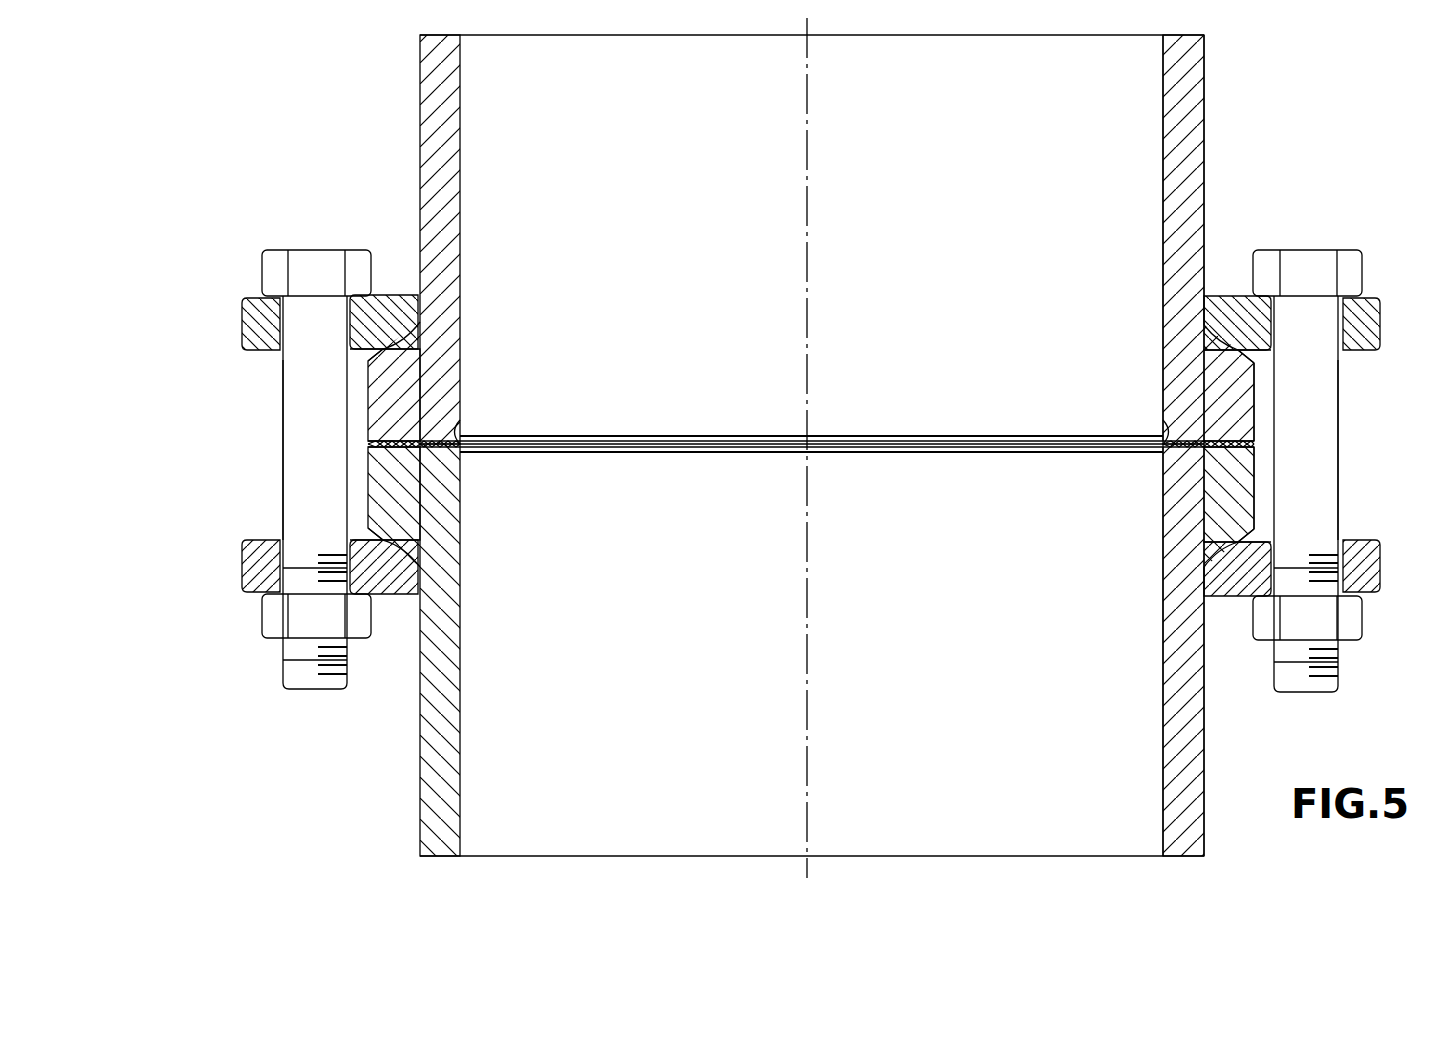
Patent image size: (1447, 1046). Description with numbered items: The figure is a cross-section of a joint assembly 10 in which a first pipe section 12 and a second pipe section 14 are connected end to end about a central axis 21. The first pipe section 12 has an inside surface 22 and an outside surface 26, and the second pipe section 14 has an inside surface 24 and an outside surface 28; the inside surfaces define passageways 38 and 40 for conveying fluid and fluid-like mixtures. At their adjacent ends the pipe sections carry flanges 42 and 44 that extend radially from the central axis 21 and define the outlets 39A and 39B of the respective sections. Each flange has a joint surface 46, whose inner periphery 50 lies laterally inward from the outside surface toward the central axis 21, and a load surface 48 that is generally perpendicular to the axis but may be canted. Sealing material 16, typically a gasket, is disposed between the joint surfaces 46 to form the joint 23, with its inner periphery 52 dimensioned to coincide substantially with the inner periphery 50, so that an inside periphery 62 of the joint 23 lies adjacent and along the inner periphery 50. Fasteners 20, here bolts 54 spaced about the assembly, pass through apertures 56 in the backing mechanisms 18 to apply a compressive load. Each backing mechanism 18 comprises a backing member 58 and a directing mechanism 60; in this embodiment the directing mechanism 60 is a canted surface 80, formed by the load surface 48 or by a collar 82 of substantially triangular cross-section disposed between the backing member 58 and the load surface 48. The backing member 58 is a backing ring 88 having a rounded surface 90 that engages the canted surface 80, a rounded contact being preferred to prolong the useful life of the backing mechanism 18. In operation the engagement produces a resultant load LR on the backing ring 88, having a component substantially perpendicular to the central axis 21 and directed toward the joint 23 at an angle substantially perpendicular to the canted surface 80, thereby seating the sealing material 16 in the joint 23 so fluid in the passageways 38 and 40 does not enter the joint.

The joint assembly 10 is at (1357, 105).
The first pipe section 12 is at (1197, 118).
The second pipe section 14 is at (1200, 775).
The sealing material 16 is at (368, 444).
The backing mechanism 18 is at (801, 448).
The fastener 20 is at (283, 475).
The central axis 21 is at (809, 100).
The inside surface of first pipe section 22 is at (1163, 127).
The joint 23 is at (486, 477).
The inside surface of second pipe section 24 is at (1163, 768).
The outside surface of first pipe section 26 is at (1205, 153).
The outside surface of second pipe section 28 is at (1205, 738).
The passageway of first pipe section 38 is at (929, 187).
The outlet of first pipe section 39A is at (1062, 427).
The outlet of second pipe section 39B is at (568, 463).
The passageway of second pipe section 40 is at (929, 669).
The flange of first pipe section 42 is at (1248, 402).
The flange of second pipe section 44 is at (1247, 483).
The joint surface 46 is at (1171, 412).
The load surface 48 is at (383, 527).
The inner periphery of joint surface 50 is at (460, 425).
The inner periphery of sealing material 52 is at (582, 436).
The bolt 54 is at (283, 390).
The aperture 56 is at (298, 292).
The backing member 58 is at (242, 332).
The directing mechanism 60 is at (420, 339).
The inside periphery of joint 62 is at (443, 466).
The canted surface 80 is at (385, 350).
The collar 82 is at (788, 565).
The backing ring 88 is at (283, 308).
The rounded surface 90 is at (400, 326).
The resultant load LR is at (1221, 544).